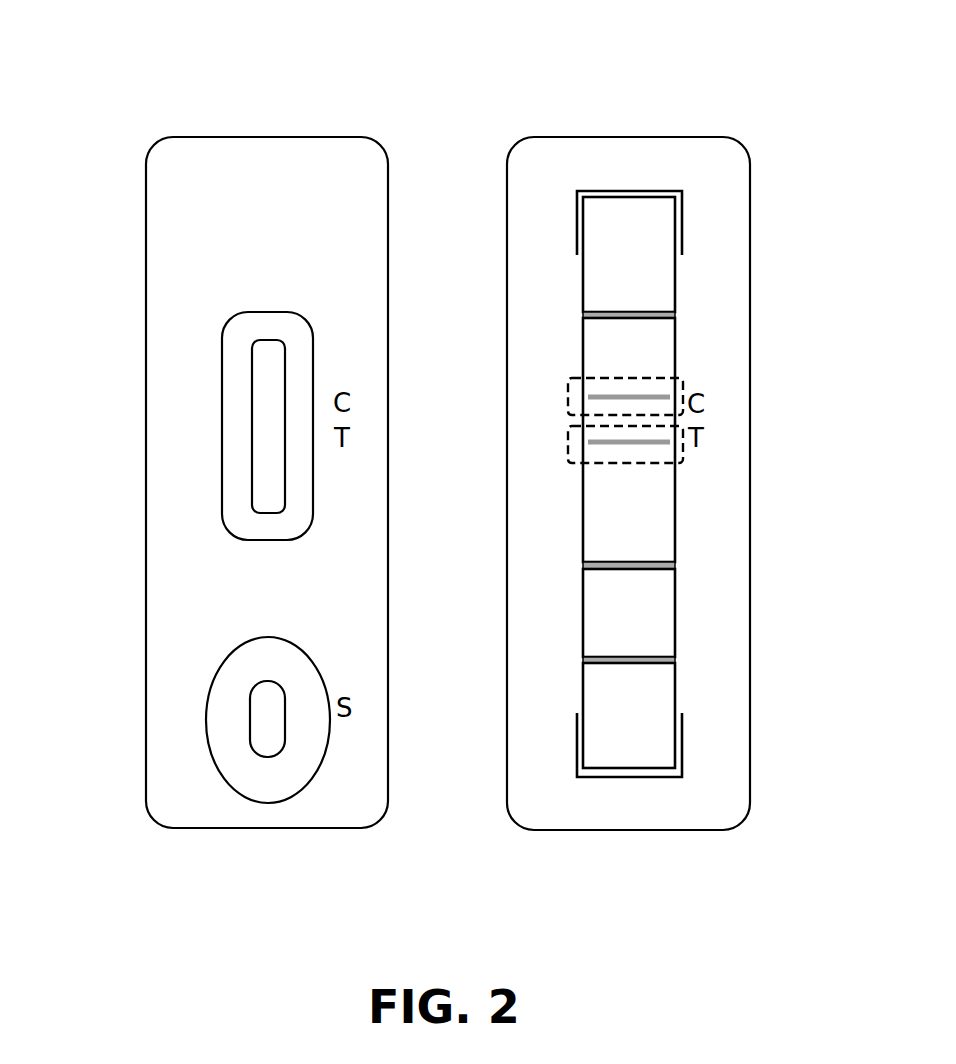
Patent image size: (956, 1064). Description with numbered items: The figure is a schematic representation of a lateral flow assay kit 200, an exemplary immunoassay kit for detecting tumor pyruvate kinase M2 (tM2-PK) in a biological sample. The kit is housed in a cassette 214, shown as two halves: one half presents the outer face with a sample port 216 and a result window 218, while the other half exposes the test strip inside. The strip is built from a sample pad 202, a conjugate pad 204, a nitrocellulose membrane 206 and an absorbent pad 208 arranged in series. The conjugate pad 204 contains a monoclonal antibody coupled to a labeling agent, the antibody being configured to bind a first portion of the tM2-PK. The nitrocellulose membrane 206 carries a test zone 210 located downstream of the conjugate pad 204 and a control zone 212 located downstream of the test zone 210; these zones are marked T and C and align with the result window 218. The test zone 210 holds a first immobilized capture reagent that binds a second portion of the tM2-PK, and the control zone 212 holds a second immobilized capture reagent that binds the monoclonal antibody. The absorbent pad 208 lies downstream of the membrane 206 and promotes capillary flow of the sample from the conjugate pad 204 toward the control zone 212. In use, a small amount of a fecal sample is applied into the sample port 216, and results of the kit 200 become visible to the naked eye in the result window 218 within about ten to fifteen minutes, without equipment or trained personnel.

The lateral flow assay kit 200 is at (384, 476).
The sample pad 202 is at (656, 704).
The conjugate pad 204 is at (656, 601).
The nitrocellulose membrane 206 is at (663, 532).
The absorbent pad 208 is at (656, 255).
The test zone 210 is at (696, 456).
The control zone 212 is at (696, 380).
The cassette 214 is at (588, 131).
The sample port 216 is at (249, 718).
The result window 218 is at (255, 428).